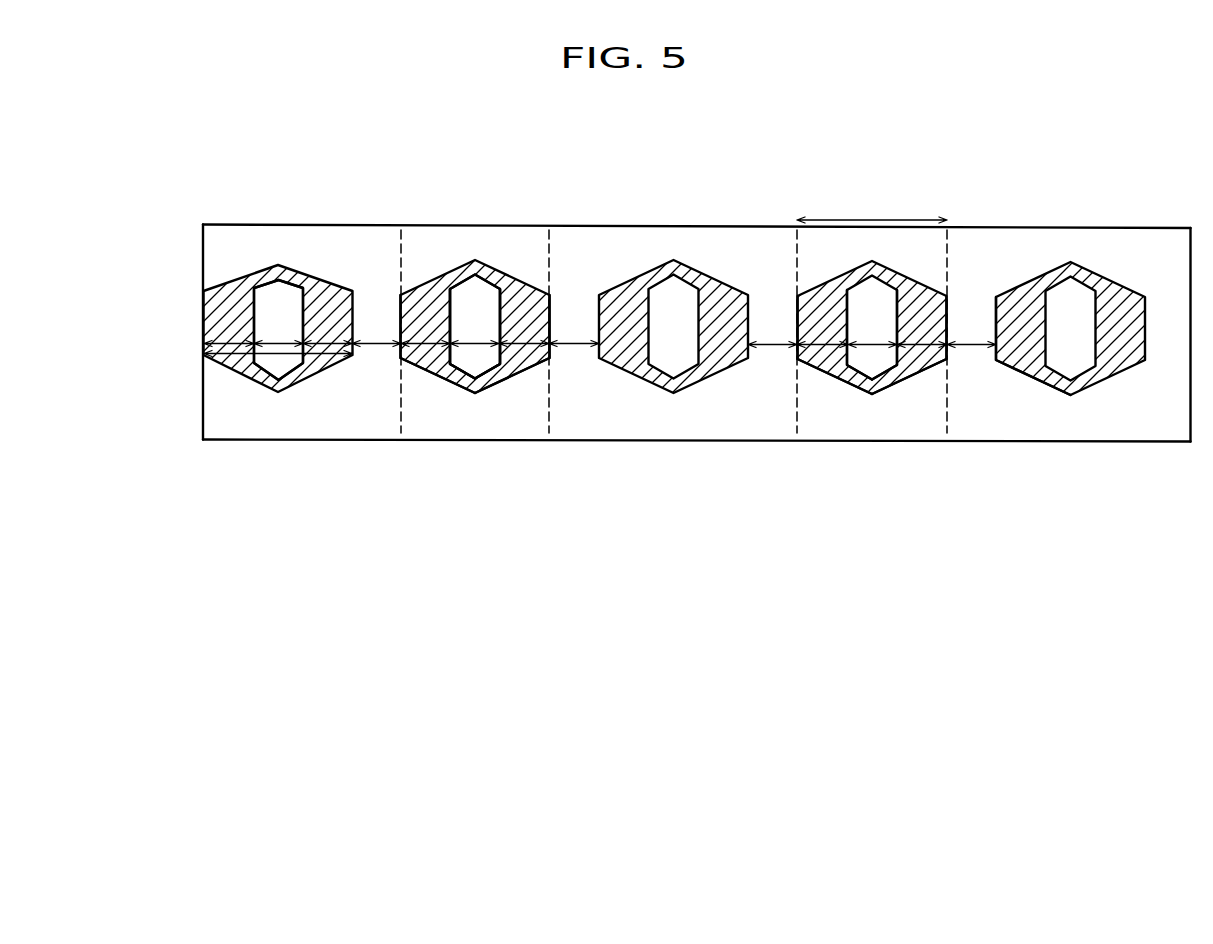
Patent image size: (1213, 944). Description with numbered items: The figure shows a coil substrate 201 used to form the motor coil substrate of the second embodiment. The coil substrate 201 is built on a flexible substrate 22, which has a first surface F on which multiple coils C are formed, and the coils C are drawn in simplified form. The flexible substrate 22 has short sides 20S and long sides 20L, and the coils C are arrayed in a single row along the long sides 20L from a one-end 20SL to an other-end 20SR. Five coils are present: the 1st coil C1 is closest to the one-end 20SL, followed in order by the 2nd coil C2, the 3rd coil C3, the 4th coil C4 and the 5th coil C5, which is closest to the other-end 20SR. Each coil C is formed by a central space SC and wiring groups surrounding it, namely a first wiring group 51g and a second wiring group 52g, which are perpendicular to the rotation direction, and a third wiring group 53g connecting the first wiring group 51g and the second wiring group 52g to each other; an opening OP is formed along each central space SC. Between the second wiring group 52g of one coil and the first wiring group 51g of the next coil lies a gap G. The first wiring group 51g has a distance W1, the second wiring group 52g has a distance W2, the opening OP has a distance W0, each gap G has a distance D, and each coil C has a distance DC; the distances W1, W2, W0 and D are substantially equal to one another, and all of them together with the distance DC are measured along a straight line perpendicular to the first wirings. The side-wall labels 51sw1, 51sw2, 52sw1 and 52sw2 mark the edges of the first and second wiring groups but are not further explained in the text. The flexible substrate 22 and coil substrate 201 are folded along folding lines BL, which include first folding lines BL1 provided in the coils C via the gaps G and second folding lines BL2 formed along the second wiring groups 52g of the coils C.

The coil substrate 201 is at (405, 140).
The short sides 20S is at (679, 345).
The one-end 20SL is at (203, 392).
The other-end 20SR is at (1191, 431).
The long sides 20L is at (233, 443).
The flexible substrate 22 is at (697, 201).
The first surface F is at (648, 236).
The folding lines BL is at (679, 281).
The first folding lines BL1 is at (788, 197).
The second folding lines BL2 is at (953, 196).
The coils C is at (677, 377).
The 1st coil C1 is at (278, 393).
The 2nd coil C2 is at (475, 393).
The 3rd coil C3 is at (645, 390).
The 4th coil C4 is at (857, 388).
The 5th coil C5 is at (1110, 382).
The opening OP is at (268, 278).
The central space SC is at (285, 276).
The first wiring group 51g is at (225, 288).
The second wiring group 52g is at (340, 286).
The third wiring group 53g is at (301, 268).
The first side wall outer surface 51sw1 is at (399, 353).
The first side wall inner surface 51sw2 is at (458, 363).
The second side wall outer surface 52sw1 is at (548, 357).
The second side wall inner surface 52sw2 is at (500, 372).
The gaps G is at (375, 314).
The distance of the opening W0 is at (575, 327).
The distance of the first wiring group W1 is at (526, 327).
The distance of the second wiring group W2 is at (625, 327).
The distance of the gap D is at (674, 327).
The distance of the coil DC is at (575, 289).